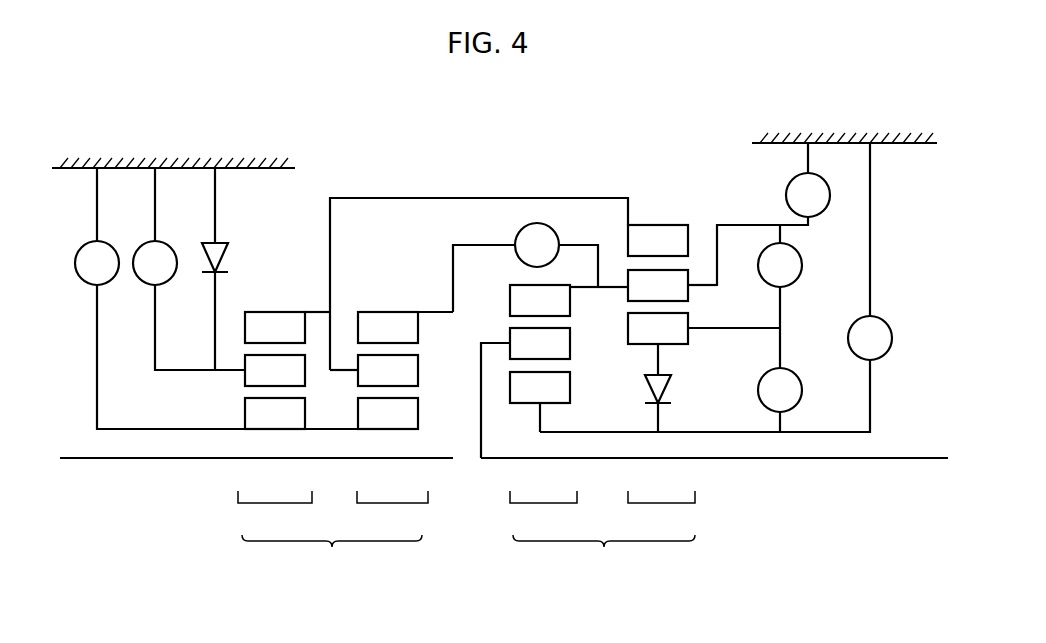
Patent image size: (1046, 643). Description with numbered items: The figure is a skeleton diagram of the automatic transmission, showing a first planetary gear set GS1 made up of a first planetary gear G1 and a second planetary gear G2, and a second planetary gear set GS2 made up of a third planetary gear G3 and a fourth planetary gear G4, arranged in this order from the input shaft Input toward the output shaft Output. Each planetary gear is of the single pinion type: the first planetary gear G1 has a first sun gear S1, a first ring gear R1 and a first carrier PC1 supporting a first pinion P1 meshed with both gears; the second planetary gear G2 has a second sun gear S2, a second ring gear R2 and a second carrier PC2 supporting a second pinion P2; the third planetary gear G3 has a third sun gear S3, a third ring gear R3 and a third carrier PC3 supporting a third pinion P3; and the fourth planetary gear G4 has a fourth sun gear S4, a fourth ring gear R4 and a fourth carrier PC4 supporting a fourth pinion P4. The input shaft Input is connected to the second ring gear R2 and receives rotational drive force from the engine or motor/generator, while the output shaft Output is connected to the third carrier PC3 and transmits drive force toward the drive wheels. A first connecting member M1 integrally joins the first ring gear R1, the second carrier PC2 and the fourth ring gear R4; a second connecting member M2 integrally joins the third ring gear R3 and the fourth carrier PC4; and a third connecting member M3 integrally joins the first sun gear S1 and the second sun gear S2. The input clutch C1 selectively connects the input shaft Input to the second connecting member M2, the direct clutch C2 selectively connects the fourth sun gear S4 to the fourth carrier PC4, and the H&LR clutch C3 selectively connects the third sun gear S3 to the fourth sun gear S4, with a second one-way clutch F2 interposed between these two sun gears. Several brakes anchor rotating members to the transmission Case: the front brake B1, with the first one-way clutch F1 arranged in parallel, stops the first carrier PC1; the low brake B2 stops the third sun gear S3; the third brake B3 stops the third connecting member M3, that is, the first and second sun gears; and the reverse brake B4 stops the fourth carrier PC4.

The case Case is at (130, 181).
The input shaft Input is at (110, 460).
The output shaft Output is at (838, 460).
The front brake B1 is at (189, 269).
The low brake B2 is at (716, 287).
The 2346 brake B3 is at (160, 298).
The reverse brake B4 is at (759, 214).
The input clutch C1 is at (540, 267).
The direct clutch C2 is at (780, 296).
The H&LR clutch C3 is at (780, 400).
The first one-way clutch F1 is at (221, 241).
The second one-way clutch F2 is at (666, 390).
The first ring gear R1 is at (287, 327).
The second ring gear R2 is at (405, 327).
The third ring gear R3 is at (554, 300).
The fourth ring gear R4 is at (658, 240).
The first pinion P1 is at (275, 370).
The second pinion P2 is at (388, 370).
The third pinion P3 is at (540, 343).
The fourth pinion P4 is at (658, 285).
The first sun gear S1 is at (301, 413).
The second sun gear S2 is at (388, 413).
The third sun gear S3 is at (540, 402).
The fourth sun gear S4 is at (704, 328).
The first carrier PC1 is at (224, 373).
The second carrier PC2 is at (342, 372).
The third carrier PC3 is at (498, 341).
The fourth carrier PC4 is at (708, 289).
The first connecting member M1 is at (447, 198).
The second connecting member M2 is at (596, 288).
The third connecting member M3 is at (345, 432).
The first planetary gear G1 is at (275, 514).
The second planetary gear G2 is at (392, 514).
The third planetary gear G3 is at (543, 514).
The fourth planetary gear G4 is at (661, 514).
The first planetary gear set GS1 is at (332, 557).
The second planetary gear set GS2 is at (604, 557).